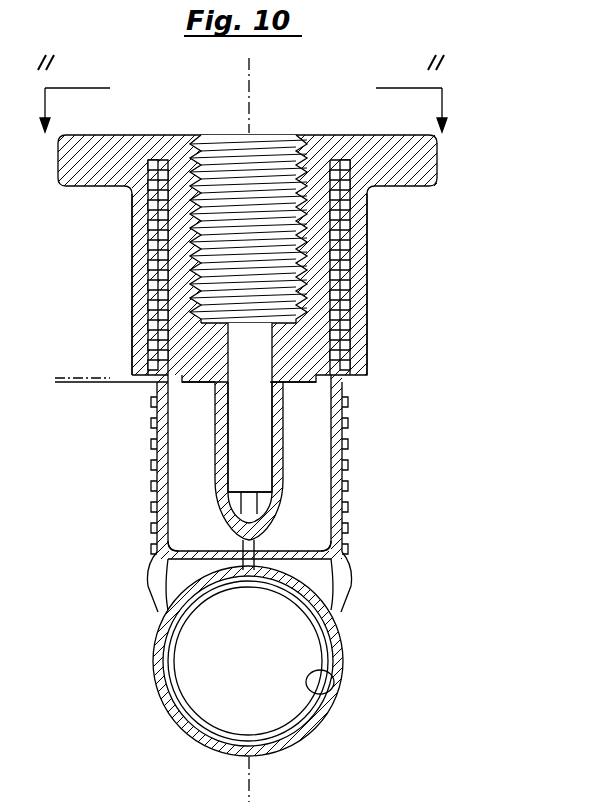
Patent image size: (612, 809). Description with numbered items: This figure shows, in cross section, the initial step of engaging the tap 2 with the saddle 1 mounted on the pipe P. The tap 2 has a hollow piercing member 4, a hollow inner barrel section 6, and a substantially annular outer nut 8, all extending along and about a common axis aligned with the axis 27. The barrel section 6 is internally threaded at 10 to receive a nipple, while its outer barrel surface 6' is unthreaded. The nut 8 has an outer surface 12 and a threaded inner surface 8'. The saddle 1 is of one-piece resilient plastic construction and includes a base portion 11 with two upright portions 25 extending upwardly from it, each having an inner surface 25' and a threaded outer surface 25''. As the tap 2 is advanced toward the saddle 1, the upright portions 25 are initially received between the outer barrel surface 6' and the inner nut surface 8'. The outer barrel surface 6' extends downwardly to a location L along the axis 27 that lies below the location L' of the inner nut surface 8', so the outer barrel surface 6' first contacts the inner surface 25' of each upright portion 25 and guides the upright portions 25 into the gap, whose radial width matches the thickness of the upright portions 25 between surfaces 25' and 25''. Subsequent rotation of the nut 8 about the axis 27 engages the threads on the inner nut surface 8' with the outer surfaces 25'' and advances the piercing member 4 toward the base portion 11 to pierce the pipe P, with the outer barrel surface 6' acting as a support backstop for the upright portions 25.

The saddle 1 is at (360, 564).
The tap 2 is at (372, 240).
The piercing member 4 is at (293, 436).
The inner barrel section 6 is at (179, 382).
The outer barrel surface 6' is at (252, 405).
The outer nut 8 is at (105, 267).
The inner surface 8' is at (375, 267).
The internal thread 10 is at (215, 140).
The base portion 11 is at (150, 686).
The outer surface 12 is at (368, 313).
The upright portions 25 is at (244, 467).
The inner surface 25' is at (249, 525).
The outer surfaces 25'' is at (258, 475).
The axis 27 is at (250, 72).
The location L is at (111, 401).
The location L' is at (82, 357).
The pipe P is at (334, 676).